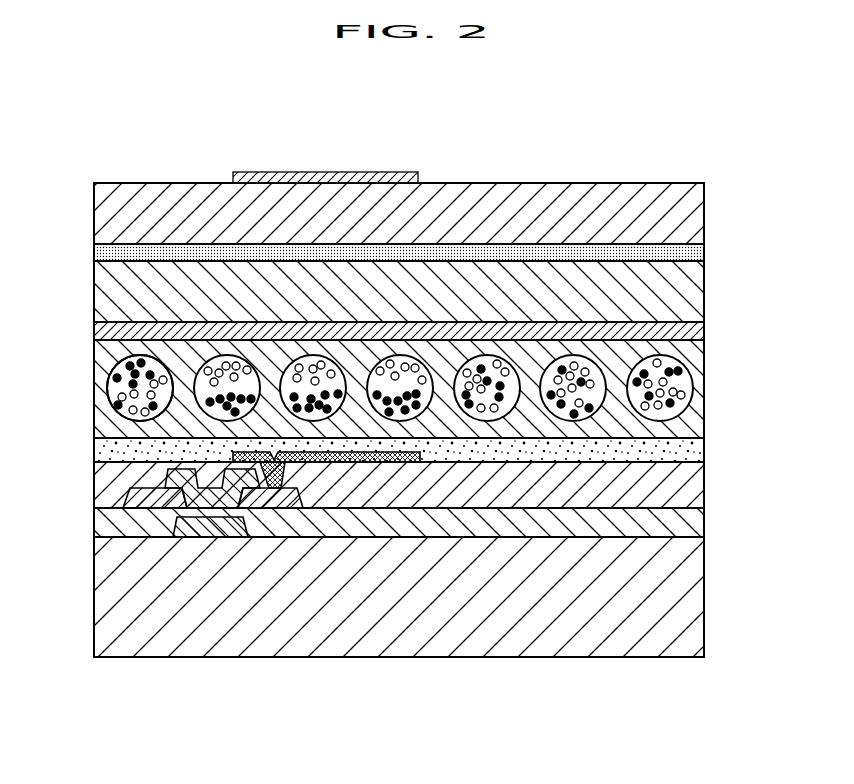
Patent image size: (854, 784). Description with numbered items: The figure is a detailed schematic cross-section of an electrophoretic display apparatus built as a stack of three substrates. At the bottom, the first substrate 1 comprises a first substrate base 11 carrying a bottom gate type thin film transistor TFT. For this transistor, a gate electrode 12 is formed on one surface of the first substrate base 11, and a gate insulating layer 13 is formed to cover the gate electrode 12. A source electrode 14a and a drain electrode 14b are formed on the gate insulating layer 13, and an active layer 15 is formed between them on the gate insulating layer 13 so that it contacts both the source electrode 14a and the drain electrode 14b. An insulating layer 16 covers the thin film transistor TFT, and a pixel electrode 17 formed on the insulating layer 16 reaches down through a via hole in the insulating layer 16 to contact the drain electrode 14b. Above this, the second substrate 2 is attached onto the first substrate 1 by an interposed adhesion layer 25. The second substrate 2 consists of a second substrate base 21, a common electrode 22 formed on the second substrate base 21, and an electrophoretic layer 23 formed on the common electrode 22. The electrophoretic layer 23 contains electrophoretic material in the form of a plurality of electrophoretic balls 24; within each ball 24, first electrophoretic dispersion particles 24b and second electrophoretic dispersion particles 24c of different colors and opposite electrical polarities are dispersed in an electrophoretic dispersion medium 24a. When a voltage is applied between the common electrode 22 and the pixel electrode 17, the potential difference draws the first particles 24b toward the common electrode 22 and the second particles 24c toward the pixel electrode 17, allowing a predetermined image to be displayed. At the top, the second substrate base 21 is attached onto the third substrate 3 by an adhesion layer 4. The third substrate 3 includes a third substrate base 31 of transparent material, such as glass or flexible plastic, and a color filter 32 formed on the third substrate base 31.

The first substrate 1 is at (404, 596).
The second substrate 2 is at (418, 349).
The third substrate 3 is at (433, 180).
The adhesion layer 4 is at (704, 252).
The first substrate base 11 is at (704, 593).
The gate electrode 12 is at (233, 530).
The gate insulating layer 13 is at (704, 520).
The source electrode 14a is at (148, 498).
The drain electrode 14b is at (282, 500).
The active layer 15 is at (195, 497).
The insulating layer 16 is at (704, 482).
The pixel electrode 17 is at (375, 460).
The second substrate base 21 is at (704, 285).
The common electrode 22 is at (704, 330).
The electrophoretic layer 23 is at (704, 425).
The electrophoretic balls 24 is at (397, 382).
The electrophoretic dispersion medium 24a is at (110, 363).
The first electrophoretic dispersion particles 24b is at (110, 380).
The second electrophoretic dispersion particles 24c is at (116, 405).
The adhesion layer 25 is at (704, 450).
The third substrate base 31 is at (704, 212).
The color filter 32 is at (330, 172).
The thin film transistor TFT is at (126, 538).